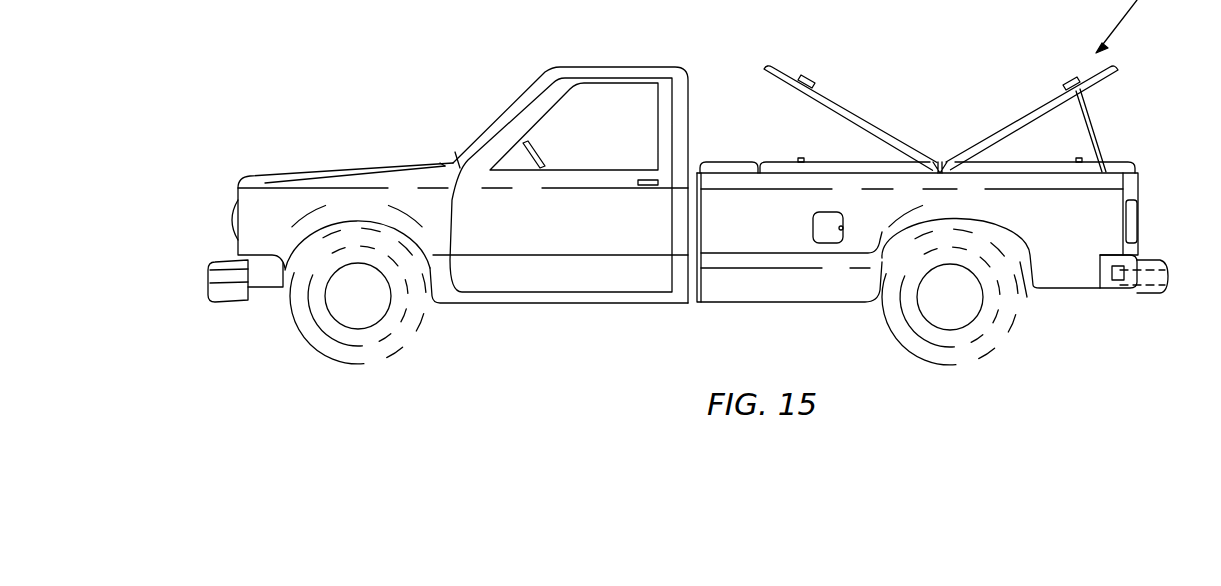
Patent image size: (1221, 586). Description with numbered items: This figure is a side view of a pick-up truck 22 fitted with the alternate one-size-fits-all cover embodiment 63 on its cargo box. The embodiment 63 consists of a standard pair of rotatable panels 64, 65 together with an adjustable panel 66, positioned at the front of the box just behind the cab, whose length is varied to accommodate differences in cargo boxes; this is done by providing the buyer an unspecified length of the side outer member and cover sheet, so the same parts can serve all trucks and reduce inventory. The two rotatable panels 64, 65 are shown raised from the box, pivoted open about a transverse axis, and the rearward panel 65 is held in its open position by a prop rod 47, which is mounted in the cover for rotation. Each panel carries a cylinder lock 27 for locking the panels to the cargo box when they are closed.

The pick-up truck 22 is at (515, 102).
The embodiment 63 is at (910, 0).
The adjustable panel 66 is at (723, 167).
The rotatable panel 64 is at (890, 132).
The rotatable panel 65 is at (1035, 107).
The prop rod 47 is at (1095, 132).
The cylinder lock 27 is at (820, 86).